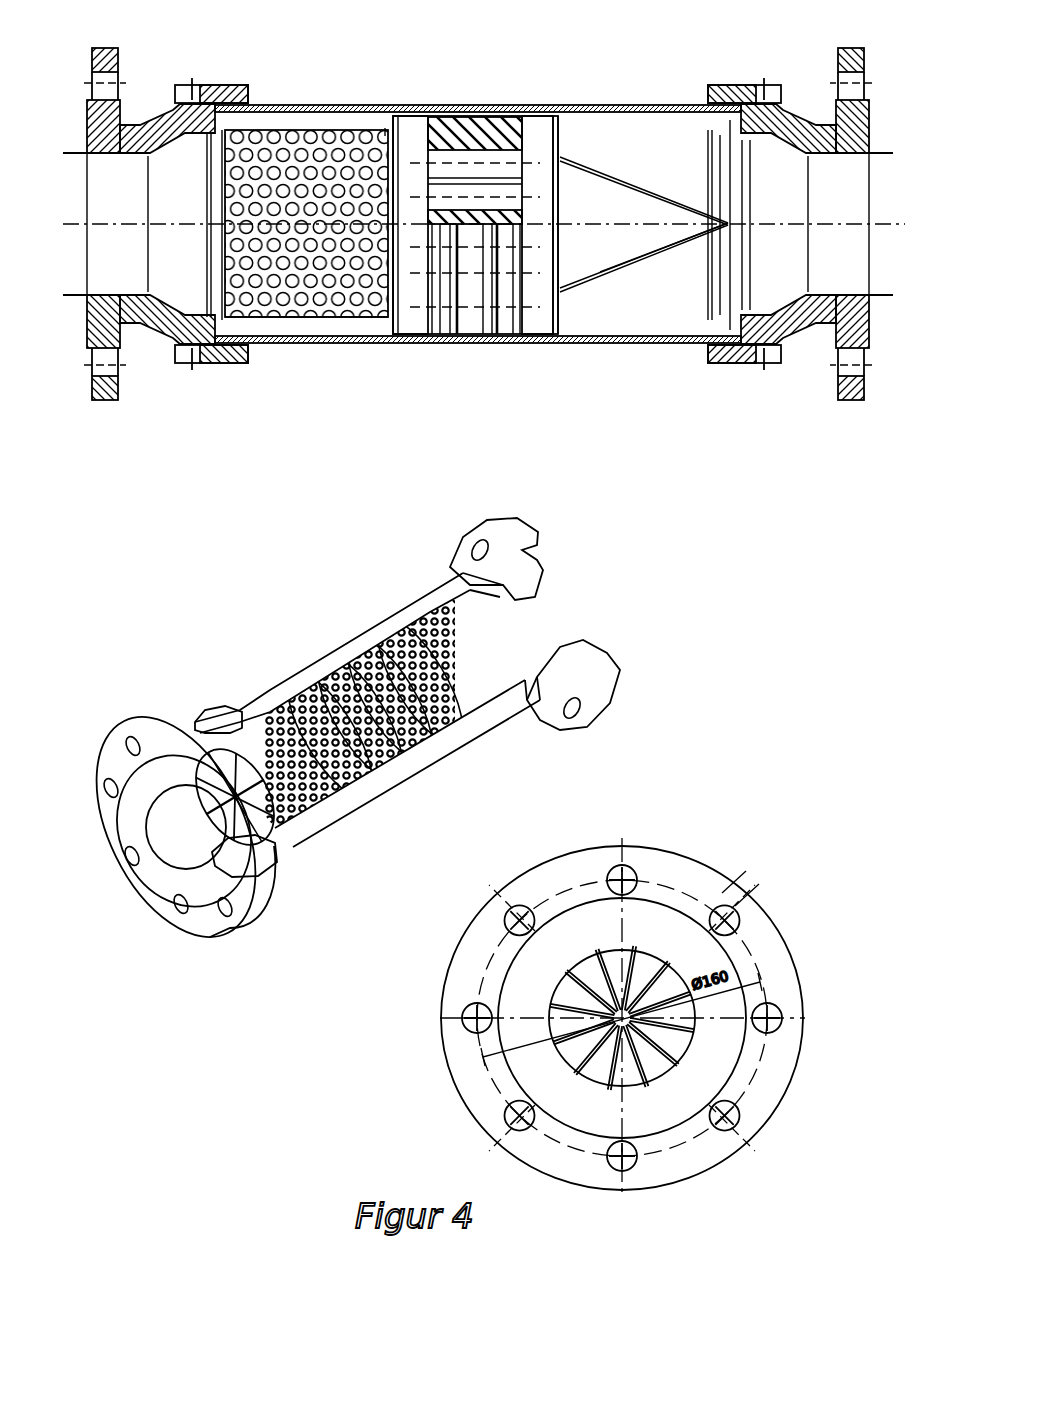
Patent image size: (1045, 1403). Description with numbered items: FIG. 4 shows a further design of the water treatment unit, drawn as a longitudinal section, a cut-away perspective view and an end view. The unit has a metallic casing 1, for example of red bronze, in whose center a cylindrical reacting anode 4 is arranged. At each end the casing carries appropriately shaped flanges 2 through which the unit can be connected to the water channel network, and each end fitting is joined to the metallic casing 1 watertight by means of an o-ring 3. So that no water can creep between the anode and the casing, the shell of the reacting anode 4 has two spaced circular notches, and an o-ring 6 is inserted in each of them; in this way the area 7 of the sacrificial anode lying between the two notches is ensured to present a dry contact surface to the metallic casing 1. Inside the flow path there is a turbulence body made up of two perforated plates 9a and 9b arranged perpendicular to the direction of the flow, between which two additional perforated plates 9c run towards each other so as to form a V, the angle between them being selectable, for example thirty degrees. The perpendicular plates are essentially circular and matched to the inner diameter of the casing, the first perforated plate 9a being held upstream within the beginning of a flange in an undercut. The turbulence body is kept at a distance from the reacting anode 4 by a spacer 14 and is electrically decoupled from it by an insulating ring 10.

The metallic casing 1 is at (588, 105).
The flanges 2 is at (97, 398).
The o-ring 3 is at (225, 363).
The reacting anode 4 is at (510, 120).
The o-ring 6 is at (497, 343).
The area of sacrificial anode 7 is at (468, 106).
The first perpendicular perforated plate 9a is at (222, 190).
The second perpendicular perforated plate 9b is at (387, 128).
The additional perforated plates 9c is at (318, 318).
The insulating ring 10 is at (432, 343).
The spacer 14 is at (402, 343).